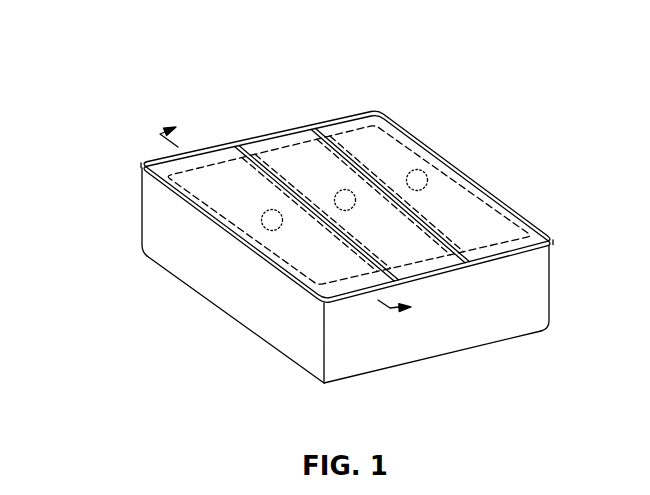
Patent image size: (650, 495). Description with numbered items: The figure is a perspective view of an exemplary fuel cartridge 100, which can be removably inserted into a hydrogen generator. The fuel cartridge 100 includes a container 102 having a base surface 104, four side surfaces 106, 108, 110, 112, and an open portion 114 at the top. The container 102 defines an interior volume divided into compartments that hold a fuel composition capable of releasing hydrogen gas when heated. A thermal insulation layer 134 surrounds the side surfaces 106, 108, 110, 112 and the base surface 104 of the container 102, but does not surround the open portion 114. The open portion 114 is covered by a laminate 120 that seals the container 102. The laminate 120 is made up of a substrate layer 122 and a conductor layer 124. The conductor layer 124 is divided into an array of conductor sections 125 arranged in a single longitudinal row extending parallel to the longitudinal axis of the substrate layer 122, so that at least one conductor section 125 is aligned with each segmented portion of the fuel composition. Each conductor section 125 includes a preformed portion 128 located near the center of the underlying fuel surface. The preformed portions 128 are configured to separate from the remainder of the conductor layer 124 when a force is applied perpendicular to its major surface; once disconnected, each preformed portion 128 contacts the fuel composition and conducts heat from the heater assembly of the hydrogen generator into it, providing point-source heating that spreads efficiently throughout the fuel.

The fuel cartridge 100 is at (128, 45).
The container 102 is at (550, 232).
The base surface 104 is at (478, 348).
The side surface 106 is at (551, 296).
The side surface 108 is at (142, 196).
The side surface 110 is at (197, 267).
The side surface 112 is at (393, 342).
The open portion 114 is at (237, 147).
The laminate 120 is at (312, 130).
The substrate layer 122 is at (338, 127).
The conductor layer 124 is at (385, 143).
The conductor sections 125 is at (287, 157).
The preformed portions 128 is at (413, 171).
The thermal insulation layer 134 is at (285, 342).